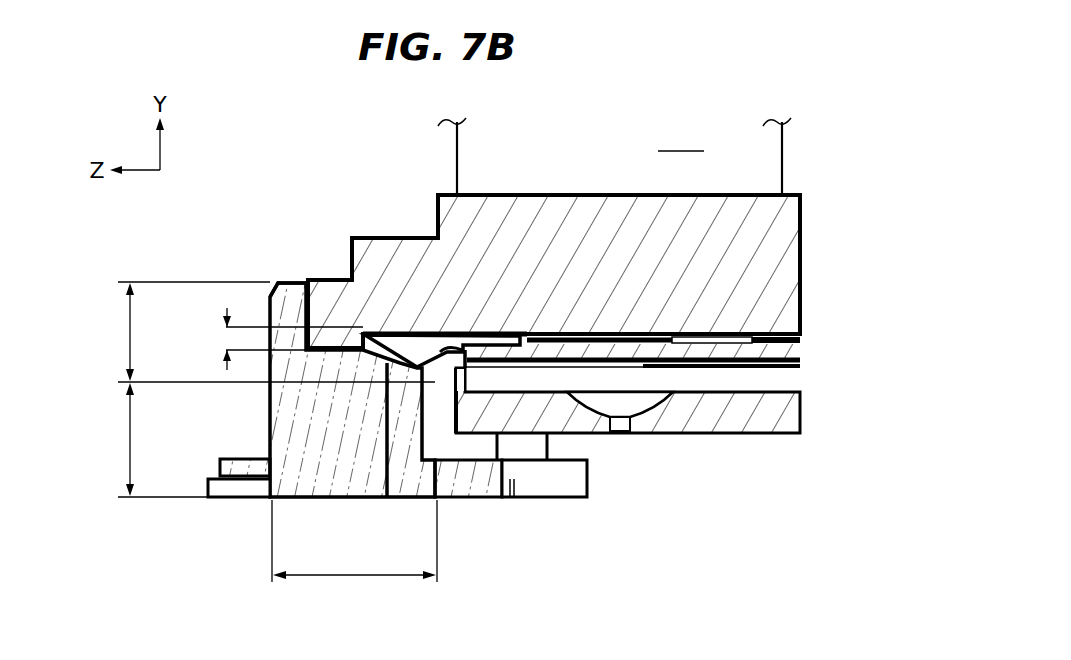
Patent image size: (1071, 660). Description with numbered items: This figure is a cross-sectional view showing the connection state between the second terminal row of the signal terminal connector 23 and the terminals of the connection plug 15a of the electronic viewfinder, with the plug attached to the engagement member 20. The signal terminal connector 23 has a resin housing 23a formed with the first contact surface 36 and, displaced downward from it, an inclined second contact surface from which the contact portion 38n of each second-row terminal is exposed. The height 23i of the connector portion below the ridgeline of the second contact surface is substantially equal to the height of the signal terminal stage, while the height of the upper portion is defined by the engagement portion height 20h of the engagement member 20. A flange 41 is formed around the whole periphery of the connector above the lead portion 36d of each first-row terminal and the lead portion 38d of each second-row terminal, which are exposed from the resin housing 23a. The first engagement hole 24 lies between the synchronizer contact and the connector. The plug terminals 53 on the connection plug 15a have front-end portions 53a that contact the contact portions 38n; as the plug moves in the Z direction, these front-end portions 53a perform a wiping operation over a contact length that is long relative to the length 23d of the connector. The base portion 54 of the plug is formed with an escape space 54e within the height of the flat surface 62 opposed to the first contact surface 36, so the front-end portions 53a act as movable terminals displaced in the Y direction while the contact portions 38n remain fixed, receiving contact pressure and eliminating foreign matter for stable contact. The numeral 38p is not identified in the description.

The connection plug 15a is at (680, 162).
The engagement member 20 is at (413, 248).
The engagement portion height 20h is at (258, 332).
The signal terminal connector 23 is at (278, 254).
The resin housing 23a is at (300, 478).
The length of the signal terminal connector 23d is at (354, 552).
The height of the lower portion of the signal terminal connector 23i is at (147, 440).
The first engagement hole 24 is at (620, 418).
The first contact surface 36 is at (290, 293).
The lead portion 36d is at (237, 490).
The lead portion 38d is at (470, 488).
The contact portion 38n is at (398, 366).
The protrusion 38p is at (408, 485).
The flange 41 is at (556, 485).
The plug terminal 53 is at (497, 328).
The front-end portion 53a is at (403, 327).
The base portion 54 is at (577, 202).
The escape space 54e is at (270, 339).
The flat surface 62 is at (333, 312).